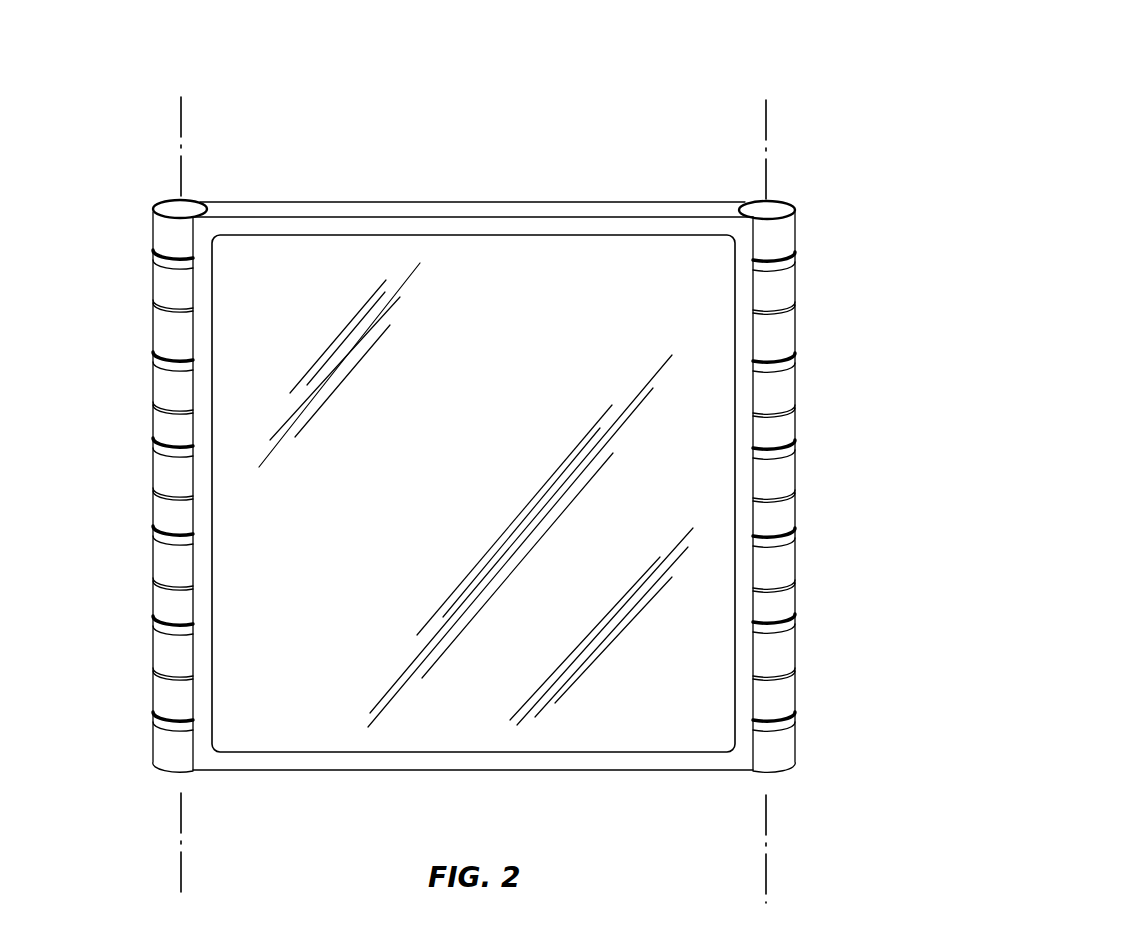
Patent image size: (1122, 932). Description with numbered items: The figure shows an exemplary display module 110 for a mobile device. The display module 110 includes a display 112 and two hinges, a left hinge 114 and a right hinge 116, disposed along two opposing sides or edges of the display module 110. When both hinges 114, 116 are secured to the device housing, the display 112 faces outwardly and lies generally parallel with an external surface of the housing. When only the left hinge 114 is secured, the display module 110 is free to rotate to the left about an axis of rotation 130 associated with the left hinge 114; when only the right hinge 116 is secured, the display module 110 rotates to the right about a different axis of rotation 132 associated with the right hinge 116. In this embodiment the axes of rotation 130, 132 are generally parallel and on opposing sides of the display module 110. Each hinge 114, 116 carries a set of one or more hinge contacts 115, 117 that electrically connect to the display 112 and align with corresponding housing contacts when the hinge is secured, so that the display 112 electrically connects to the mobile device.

The display module 110 is at (678, 71).
The display 112 is at (491, 478).
The left hinge 114 is at (171, 425).
The hinge contacts 115 is at (176, 265).
The right hinge 116 is at (775, 387).
The hinge contacts 117 is at (776, 267).
The axis of rotation 130 is at (182, 132).
The axis of rotation 132 is at (765, 162).